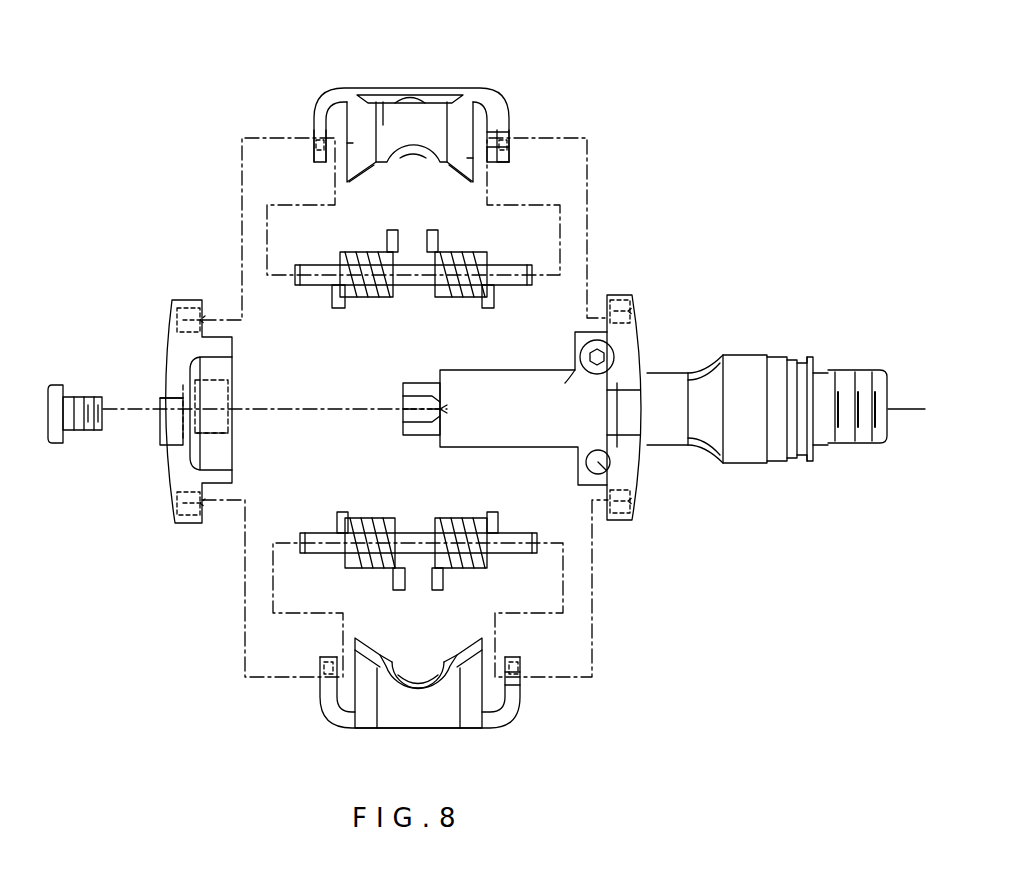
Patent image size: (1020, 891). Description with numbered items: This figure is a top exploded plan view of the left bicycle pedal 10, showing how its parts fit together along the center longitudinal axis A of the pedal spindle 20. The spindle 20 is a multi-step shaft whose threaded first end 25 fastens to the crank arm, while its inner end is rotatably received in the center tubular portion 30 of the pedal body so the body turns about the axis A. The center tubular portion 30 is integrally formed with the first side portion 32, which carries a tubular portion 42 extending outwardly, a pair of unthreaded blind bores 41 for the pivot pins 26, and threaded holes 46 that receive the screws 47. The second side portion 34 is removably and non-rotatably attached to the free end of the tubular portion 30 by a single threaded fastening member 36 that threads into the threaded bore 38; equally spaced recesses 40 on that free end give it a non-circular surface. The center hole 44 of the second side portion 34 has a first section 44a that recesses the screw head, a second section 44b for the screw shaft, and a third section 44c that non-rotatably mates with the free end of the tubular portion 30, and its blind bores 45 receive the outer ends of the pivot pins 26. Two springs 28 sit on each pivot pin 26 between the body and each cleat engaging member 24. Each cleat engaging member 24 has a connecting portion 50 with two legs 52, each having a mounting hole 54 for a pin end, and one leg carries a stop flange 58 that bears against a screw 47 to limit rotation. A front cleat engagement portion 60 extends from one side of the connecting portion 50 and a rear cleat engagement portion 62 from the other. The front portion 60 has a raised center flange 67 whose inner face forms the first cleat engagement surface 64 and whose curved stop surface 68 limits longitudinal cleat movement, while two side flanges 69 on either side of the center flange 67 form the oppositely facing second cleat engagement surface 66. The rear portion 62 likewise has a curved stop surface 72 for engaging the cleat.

The bicycle pedal 10 is at (680, 138).
The pedal spindle 20 is at (812, 355).
The cleat engaging member 24 is at (497, 86).
The first end 25 is at (852, 445).
The pivot pin 26 is at (510, 265).
The spring 28 is at (393, 297).
The center tubular portion 30 is at (515, 447).
The first side portion 32 is at (640, 355).
The second side portion 34 is at (170, 340).
The threaded fastening member 36 is at (55, 385).
The threaded bore 38 is at (405, 410).
The recesses 40 is at (415, 392).
The blind bores 41 is at (600, 302).
The tubular portion 42 is at (683, 368).
The center hole 44 is at (178, 428).
The first section 44a is at (165, 392).
The second section 44b is at (215, 398).
The third section 44c is at (215, 433).
The blind bores 45 is at (197, 305).
The threaded hole 46 is at (615, 455).
The screw 47 is at (600, 345).
The connecting portion 50 is at (458, 93).
The legs 52 is at (318, 130).
The mounting hole 54 is at (320, 144).
The stop portion or flange 58 is at (500, 173).
The front cleat engagement portion 60 is at (352, 188).
The rear cleat engagement portion 62 is at (380, 700).
The first cleat engagement surface 64 is at (432, 660).
The second cleat engagement surface 66 is at (355, 168).
The raised center flange 67 is at (386, 125).
The curved stop surface 68 is at (413, 150).
The side flanges 69 is at (345, 143).
The curved stop surface 72 is at (410, 690).
The center longitudinal axis A is at (900, 409).